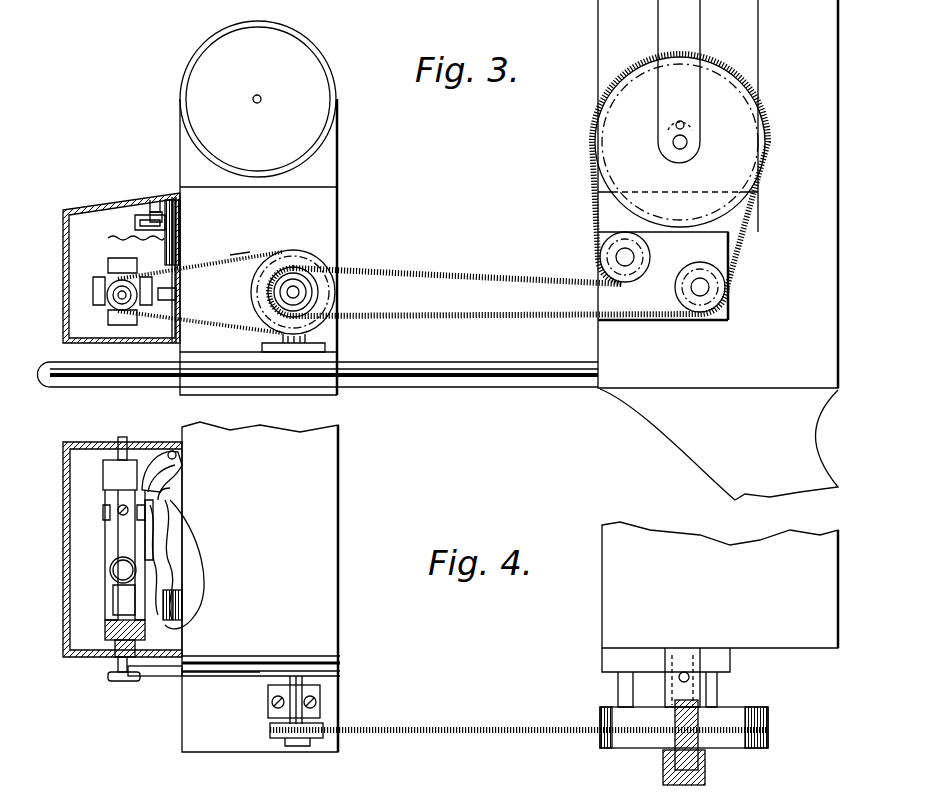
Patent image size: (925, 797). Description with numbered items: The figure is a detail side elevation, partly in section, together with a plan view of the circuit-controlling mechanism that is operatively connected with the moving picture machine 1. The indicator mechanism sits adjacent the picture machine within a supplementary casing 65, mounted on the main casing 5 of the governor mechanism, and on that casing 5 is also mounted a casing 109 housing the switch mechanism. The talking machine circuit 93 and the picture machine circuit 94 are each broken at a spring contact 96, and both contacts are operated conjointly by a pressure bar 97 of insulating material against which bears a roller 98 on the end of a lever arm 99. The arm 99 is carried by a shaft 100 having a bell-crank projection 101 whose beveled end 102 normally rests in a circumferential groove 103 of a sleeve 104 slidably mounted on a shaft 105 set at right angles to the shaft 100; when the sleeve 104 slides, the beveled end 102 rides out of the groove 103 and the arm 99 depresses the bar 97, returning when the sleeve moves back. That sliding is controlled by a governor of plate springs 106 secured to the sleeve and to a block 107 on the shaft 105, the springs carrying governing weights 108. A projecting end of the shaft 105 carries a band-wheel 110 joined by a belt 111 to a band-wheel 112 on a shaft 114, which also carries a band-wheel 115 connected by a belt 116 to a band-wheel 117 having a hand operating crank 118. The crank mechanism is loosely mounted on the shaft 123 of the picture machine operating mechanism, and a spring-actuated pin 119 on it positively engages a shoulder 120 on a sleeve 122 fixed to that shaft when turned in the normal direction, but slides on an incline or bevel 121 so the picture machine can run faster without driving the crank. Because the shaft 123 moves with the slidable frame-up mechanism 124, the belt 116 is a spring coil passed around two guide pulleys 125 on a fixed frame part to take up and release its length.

In FIG. 3, the moving picture machine 1 is at (778, 246).
In FIG. 4, the moving picture machine 1 is at (720, 597).
In FIG. 3, the casing of the governor mechanism 5 is at (258, 247).
In FIG. 4, the casing of the governor mechanism 5 is at (260, 587).
In FIG. 3, the supplementary casing 65 is at (258, 99).
In FIG. 3, the talking machine circuit 93 is at (136, 251).
In FIG. 4, the talking machine circuit 93 is at (185, 560).
In FIG. 4, the picture machine circuit 94 is at (180, 575).
In FIG. 3, the spring contact 96 is at (173, 217).
In FIG. 4, the spring contact 96 is at (183, 616).
In FIG. 3, the pressure bar 97 is at (179, 236).
In FIG. 4, the pressure bar 97 is at (170, 548).
In FIG. 3, the roller 98 is at (152, 200).
In FIG. 4, the roller 98 is at (166, 624).
In FIG. 3, the lever arm 99 is at (108, 206).
In FIG. 4, the lever arm 99 is at (165, 516).
In FIG. 3, the shaft 100 is at (160, 322).
In FIG. 4, the shaft 100 is at (177, 457).
In FIG. 3, the bell-crank projection 101 is at (177, 296).
In FIG. 4, the bell-crank projection 101 is at (172, 478).
In FIG. 4, the beveled end 102 is at (160, 500).
In FIG. 4, the circumferential groove 103 is at (112, 490).
In FIG. 4, the sleeve 104 is at (97, 444).
In FIG. 3, the shaft 105 is at (112, 305).
In FIG. 4, the shaft 105 is at (128, 445).
In FIG. 3, the plate springs 106 is at (128, 260).
In FIG. 4, the plate springs 106 is at (115, 545).
In FIG. 3, the block 107 is at (109, 289).
In FIG. 4, the block 107 is at (112, 650).
In FIG. 3, the governing weights 108 is at (99, 278).
In FIG. 4, the governing weights 108 is at (101, 581).
In FIG. 3, the casing 109 is at (103, 200).
In FIG. 4, the casing 109 is at (156, 668).
In FIG. 3, the band-wheel 110 is at (140, 287).
In FIG. 4, the band-wheel 110 is at (118, 682).
In FIG. 3, the belt 111 is at (236, 260).
In FIG. 4, the belt 111 is at (222, 668).
In FIG. 3, the band-wheel 112 is at (312, 262).
In FIG. 4, the band-wheel 112 is at (336, 660).
In FIG. 4, the shaft 114 is at (306, 700).
In FIG. 3, the band-wheel 115 is at (312, 292).
In FIG. 4, the band-wheel 115 is at (313, 740).
In FIG. 3, the belt 116 is at (522, 270).
In FIG. 4, the belt 116 is at (495, 735).
In FIG. 3, the band-wheel 117 is at (680, 142).
In FIG. 4, the band-wheel 117 is at (770, 718).
In FIG. 3, the operating crank 118 is at (683, 24).
In FIG. 3, the spring-actuated pin 119 is at (680, 121).
In FIG. 4, the spring-actuated pin 119 is at (707, 770).
In FIG. 4, the shoulder 120 is at (700, 705).
In FIG. 4, the incline or bevel 121 is at (668, 702).
In FIG. 3, the sleeve 122 is at (693, 129).
In FIG. 4, the sleeve 122 is at (690, 660).
In FIG. 3, the shaft 123 is at (684, 148).
In FIG. 4, the shaft 123 is at (680, 662).
In FIG. 3, the slidable frame-up mechanism 124 is at (648, 40).
In FIG. 3, the guide pulleys 125 is at (615, 248).